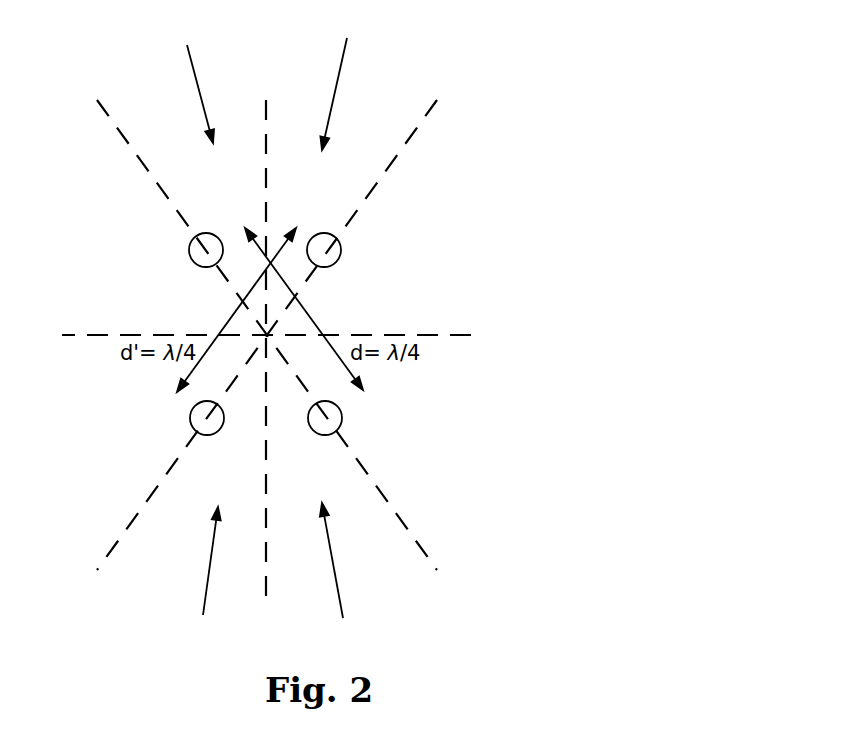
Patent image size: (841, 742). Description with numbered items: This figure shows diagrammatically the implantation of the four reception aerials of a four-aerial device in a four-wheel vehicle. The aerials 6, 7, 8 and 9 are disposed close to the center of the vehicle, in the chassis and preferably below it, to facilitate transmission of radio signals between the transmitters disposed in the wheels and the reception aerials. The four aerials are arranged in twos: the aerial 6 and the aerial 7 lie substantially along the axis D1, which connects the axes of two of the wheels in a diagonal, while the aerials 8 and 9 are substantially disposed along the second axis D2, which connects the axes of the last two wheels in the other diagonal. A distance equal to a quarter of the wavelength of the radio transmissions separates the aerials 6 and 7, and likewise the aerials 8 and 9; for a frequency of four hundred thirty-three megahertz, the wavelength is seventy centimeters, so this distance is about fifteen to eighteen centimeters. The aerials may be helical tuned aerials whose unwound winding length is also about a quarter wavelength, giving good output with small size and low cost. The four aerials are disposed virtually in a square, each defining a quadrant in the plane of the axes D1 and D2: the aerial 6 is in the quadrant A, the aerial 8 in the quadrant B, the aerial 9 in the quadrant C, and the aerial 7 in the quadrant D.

The aerial 6 is at (189, 252).
The aerial 7 is at (333, 422).
The aerial 8 is at (340, 253).
The aerial 9 is at (200, 422).
The axis D1 is at (167, 195).
The second axis D2 is at (353, 213).
The quadrant A is at (193, 73).
The quadrant B is at (337, 76).
The quadrant C is at (205, 580).
The quadrant D is at (340, 582).